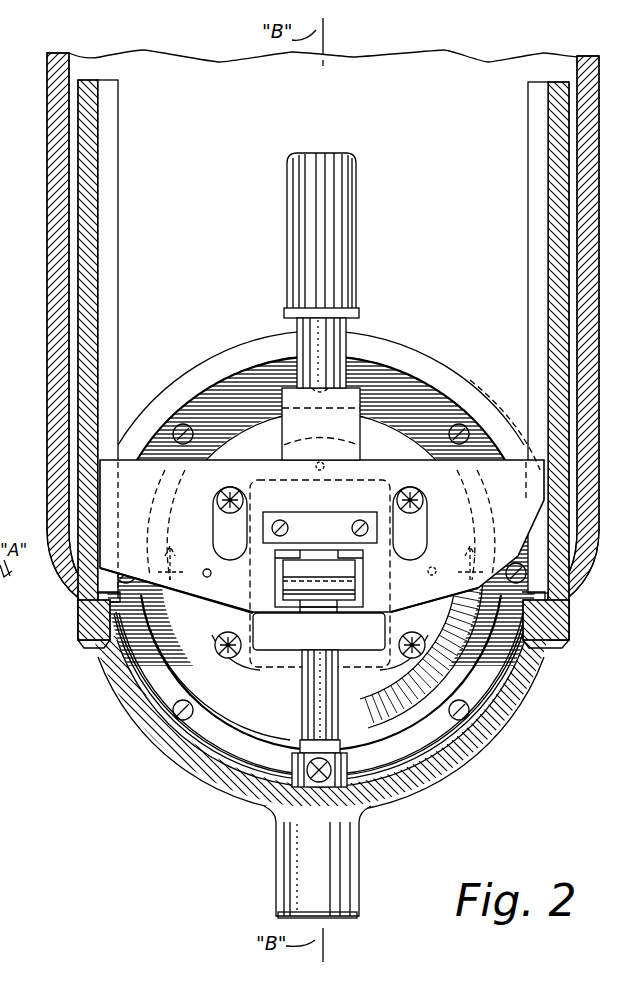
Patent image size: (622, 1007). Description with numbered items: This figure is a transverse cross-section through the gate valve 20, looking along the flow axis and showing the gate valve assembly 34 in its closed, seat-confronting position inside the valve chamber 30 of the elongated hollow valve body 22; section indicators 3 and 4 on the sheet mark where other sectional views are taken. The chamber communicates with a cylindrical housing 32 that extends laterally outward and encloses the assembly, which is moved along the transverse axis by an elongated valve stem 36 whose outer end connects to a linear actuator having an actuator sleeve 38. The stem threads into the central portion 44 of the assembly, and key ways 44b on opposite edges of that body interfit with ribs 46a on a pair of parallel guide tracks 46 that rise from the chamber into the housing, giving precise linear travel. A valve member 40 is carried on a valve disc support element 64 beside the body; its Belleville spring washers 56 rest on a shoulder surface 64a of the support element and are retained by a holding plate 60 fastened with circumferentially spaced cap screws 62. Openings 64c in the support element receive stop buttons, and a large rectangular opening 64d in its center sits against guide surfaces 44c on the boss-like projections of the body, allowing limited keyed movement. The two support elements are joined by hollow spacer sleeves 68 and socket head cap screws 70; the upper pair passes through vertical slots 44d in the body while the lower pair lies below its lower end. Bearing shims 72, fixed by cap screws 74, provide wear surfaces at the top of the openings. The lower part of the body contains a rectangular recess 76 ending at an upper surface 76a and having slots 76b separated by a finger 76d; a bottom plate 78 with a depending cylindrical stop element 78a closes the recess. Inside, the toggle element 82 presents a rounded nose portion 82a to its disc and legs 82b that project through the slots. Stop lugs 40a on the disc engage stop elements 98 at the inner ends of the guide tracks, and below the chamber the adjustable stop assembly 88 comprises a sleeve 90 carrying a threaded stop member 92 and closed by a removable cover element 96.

The gate valve 20 is at (566, 812).
The valve body 22 is at (482, 766).
The valve chamber 30 is at (230, 776).
The housing 32 is at (50, 58).
The gate valve assembly 34 is at (443, 346).
The valve stem 36 is at (298, 330).
The actuator sleeve 38 is at (356, 200).
The valve member 40 is at (268, 368).
The stop lug 40a is at (92, 600).
The central portion 44 is at (388, 420).
The key ways 44b is at (100, 486).
The guide surfaces 44c is at (430, 574).
The vertical slots 44d is at (323, 522).
The guide tracks 46 is at (86, 108).
The ribs 46a is at (108, 152).
The Belleville spring washers 56 is at (180, 752).
The holding plate 60 is at (442, 740).
The cap screws 62 is at (181, 426).
The valve disc support element 64 is at (402, 772).
The shoulder surface 64a is at (252, 720).
The openings 64c is at (318, 462).
The rectangular opening 64d is at (373, 702).
The spacer sleeves 68 is at (223, 511).
The socket head cap screws 70 is at (240, 487).
The bearing shims 72 is at (288, 512).
The cap screws 74 is at (362, 520).
The recess 76 is at (286, 614).
The upper surface 76a is at (350, 551).
The slots 76b is at (248, 602).
The finger 76d is at (325, 612).
The bottom plate 78 is at (302, 672).
The stop element 78a is at (306, 714).
The toggle element 82 is at (276, 578).
The nose portion 82a is at (338, 601).
The legs 82b is at (296, 558).
The adjustable stop assembly 88 is at (267, 889).
The sleeve 90 is at (360, 876).
The stop member 92 is at (362, 786).
The cover element 96 is at (350, 916).
The stop elements 98 is at (88, 636).
The section line 3 is at (12, 310).
The section line 4 is at (321, 557).